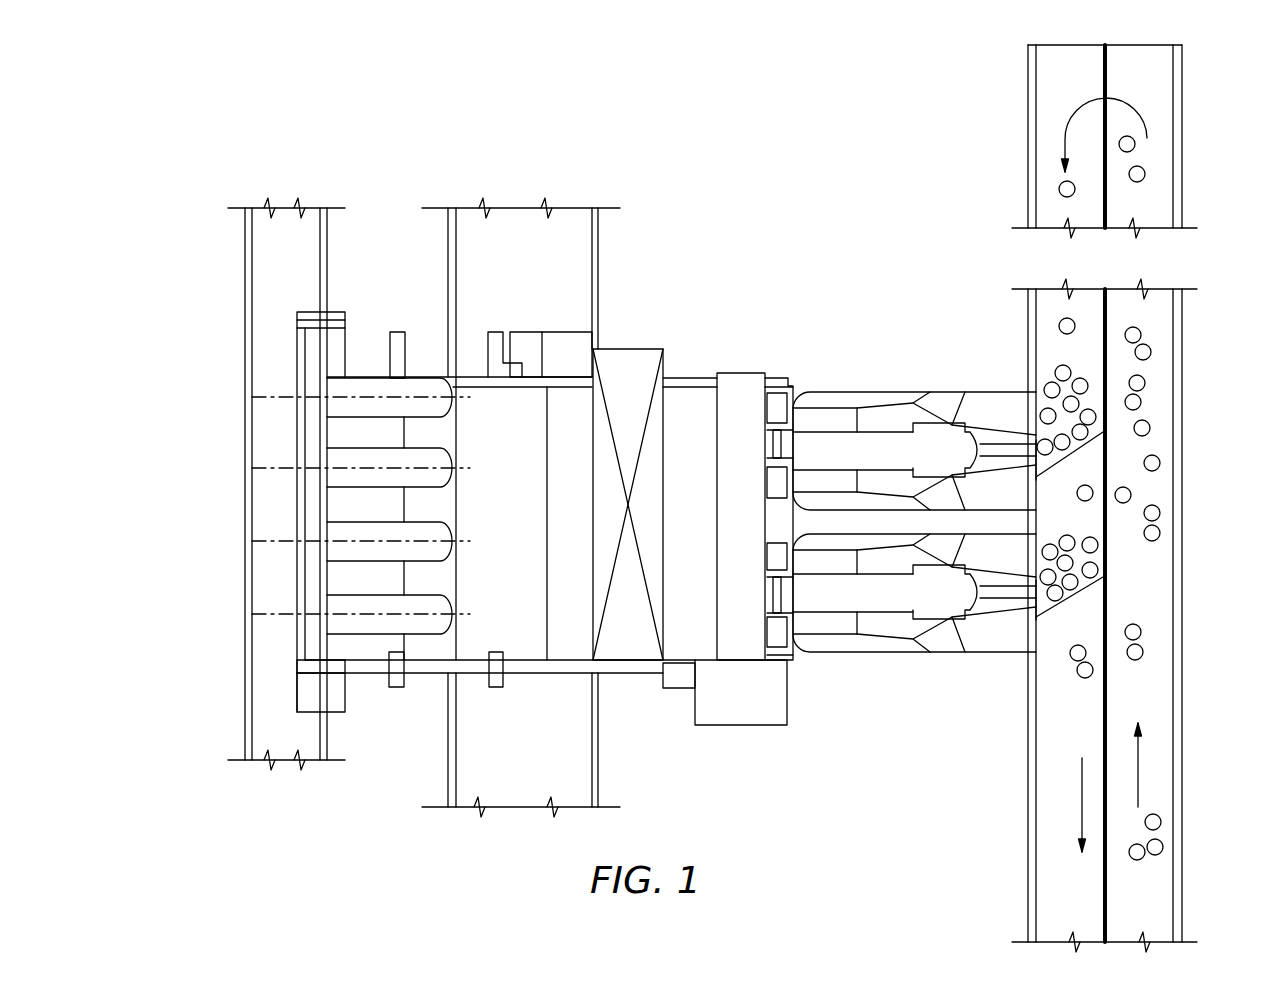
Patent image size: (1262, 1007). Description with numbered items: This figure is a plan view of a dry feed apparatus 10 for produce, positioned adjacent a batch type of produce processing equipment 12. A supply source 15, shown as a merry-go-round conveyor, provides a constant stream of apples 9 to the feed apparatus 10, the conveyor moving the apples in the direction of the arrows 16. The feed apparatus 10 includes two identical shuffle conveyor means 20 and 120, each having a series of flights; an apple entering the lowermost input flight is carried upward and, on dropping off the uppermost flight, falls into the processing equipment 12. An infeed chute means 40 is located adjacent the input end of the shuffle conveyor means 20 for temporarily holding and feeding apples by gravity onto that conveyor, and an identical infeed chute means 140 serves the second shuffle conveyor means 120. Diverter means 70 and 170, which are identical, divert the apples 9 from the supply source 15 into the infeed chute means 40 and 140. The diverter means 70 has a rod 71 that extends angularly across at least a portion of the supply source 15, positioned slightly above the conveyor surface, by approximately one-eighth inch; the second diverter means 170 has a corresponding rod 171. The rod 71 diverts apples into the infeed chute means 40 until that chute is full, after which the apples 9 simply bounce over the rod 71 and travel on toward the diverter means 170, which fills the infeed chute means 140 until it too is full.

The apples 9 is at (1058, 192).
The dry feed apparatus 10 is at (853, 280).
The produce processing equipment 12 is at (682, 358).
The supply source 15 is at (1183, 101).
The arrows 16 is at (1065, 147).
The shuffle conveyor means 20 is at (938, 442).
The infeed chute means 40 is at (983, 423).
The diverter means 70 is at (1063, 445).
The rod 71 is at (1073, 438).
The second shuffle conveyor means 120 is at (950, 595).
The second infeed chute means 140 is at (1008, 617).
The second diverter means 170 is at (1076, 600).
The rod of second diverter means 171 is at (1068, 596).